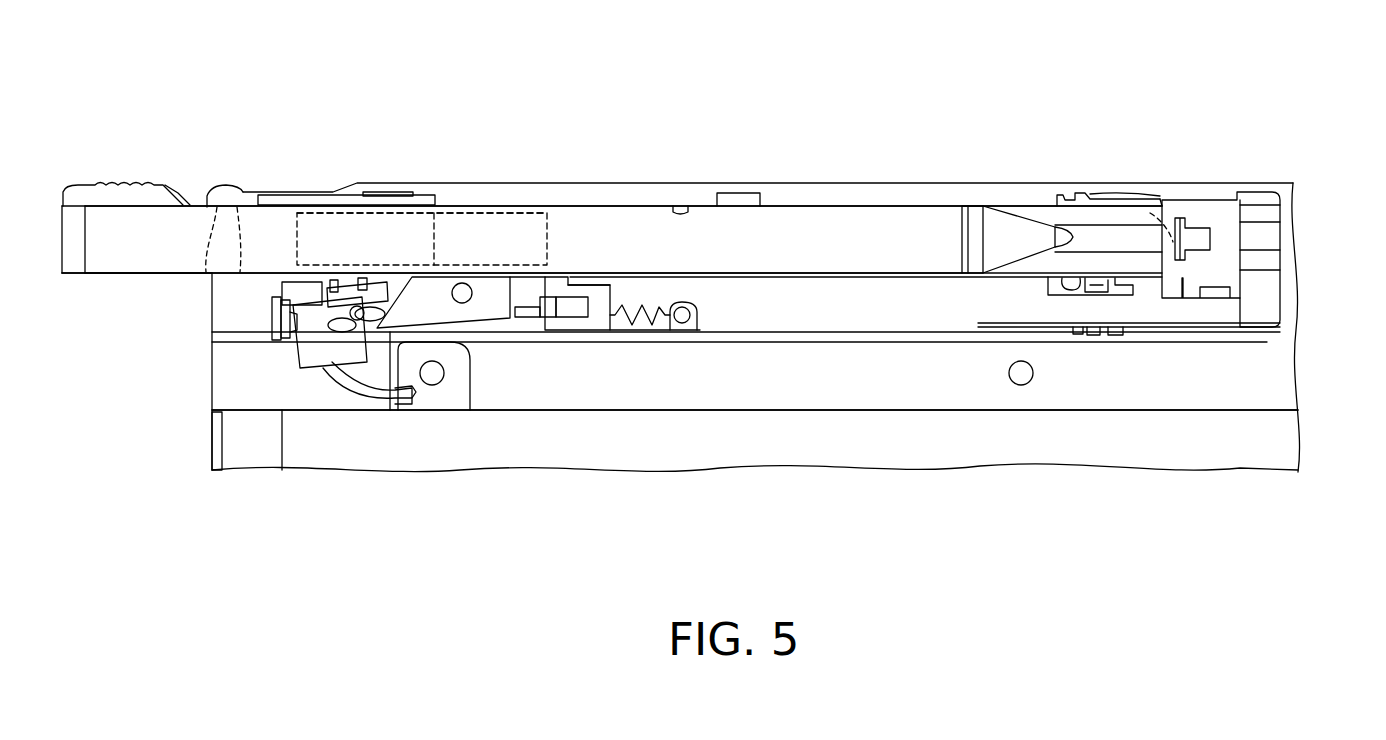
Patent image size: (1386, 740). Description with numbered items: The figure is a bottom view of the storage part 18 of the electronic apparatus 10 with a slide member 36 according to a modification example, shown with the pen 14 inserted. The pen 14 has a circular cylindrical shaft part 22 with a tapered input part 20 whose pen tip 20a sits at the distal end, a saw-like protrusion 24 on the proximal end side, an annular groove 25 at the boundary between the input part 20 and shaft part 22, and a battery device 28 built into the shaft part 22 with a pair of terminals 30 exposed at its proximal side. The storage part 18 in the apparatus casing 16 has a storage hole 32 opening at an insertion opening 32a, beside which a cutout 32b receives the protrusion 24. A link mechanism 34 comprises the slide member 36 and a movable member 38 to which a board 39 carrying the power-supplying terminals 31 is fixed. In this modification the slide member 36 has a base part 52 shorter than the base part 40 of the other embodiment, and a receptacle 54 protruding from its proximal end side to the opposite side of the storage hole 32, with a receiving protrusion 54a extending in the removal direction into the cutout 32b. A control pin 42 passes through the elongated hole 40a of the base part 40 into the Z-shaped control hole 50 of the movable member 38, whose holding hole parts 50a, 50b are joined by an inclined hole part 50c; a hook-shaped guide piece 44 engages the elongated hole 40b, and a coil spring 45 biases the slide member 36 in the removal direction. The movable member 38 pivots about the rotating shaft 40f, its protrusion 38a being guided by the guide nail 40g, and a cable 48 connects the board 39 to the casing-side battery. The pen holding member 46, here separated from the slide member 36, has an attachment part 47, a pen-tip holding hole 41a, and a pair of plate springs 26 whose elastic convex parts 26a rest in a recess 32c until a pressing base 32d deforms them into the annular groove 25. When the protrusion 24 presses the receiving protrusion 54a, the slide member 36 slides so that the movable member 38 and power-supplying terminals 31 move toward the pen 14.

The connector device 10 is at (166, 88).
The pen 14 is at (633, 196).
The apparatus casing 16 is at (233, 438).
The storage part 18 is at (250, 293).
The input part 20 is at (1000, 220).
The pen tip 20a is at (1060, 237).
The shaft part 22 is at (795, 216).
The protrusion 24 is at (110, 190).
The annular groove 25 is at (960, 225).
The plate spring 26 is at (1165, 200).
The elastic convex part 26a is at (1075, 198).
The battery device 28 is at (502, 213).
The terminal 30 is at (226, 207).
The power-supplying terminal 31 is at (362, 278).
The storage hole 32 is at (680, 207).
The insertion opening 32a is at (210, 275).
The cutout 32b is at (245, 193).
The recess 32c is at (1055, 203).
The pressing base 32d is at (1115, 198).
The link mechanism 34 is at (643, 370).
The slide member 36 is at (522, 340).
The movable member 38 is at (287, 404).
The board 39 is at (300, 366).
The protrusion 38a is at (288, 352).
The base part 40 is at (461, 302).
The elongated hole 40a is at (342, 332).
The elongated hole 40b is at (598, 325).
The rotating shaft 40f is at (463, 283).
The guide nail 40g is at (270, 312).
The pen-tip holding hole 41a is at (1155, 200).
The control pin 42 is at (467, 343).
The guide piece 44 is at (553, 318).
The coil spring 45 is at (655, 320).
The pen holding member 46 is at (1272, 259).
The attachment part 47 is at (1225, 278).
The cable 48 is at (398, 406).
The control hole 50 is at (337, 327).
The holding hole part 50a is at (395, 290).
The holding hole part 50b is at (345, 325).
The inclined hole part 50c is at (360, 345).
The base part 52 is at (582, 320).
The receptacle 54 is at (453, 242).
The receiving protrusion 54a is at (386, 193).